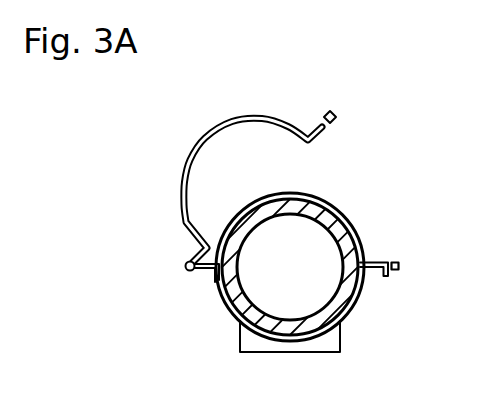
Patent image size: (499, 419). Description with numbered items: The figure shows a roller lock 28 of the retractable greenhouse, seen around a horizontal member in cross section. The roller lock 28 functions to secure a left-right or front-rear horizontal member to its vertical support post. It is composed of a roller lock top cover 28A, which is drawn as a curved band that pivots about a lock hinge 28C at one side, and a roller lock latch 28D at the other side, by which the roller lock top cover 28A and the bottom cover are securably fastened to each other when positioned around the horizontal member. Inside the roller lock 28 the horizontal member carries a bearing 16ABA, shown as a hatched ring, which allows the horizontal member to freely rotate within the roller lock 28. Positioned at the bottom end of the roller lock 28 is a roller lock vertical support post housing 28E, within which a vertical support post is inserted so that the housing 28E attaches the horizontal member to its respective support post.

The bearing 16ABA is at (308, 200).
The roller lock 28 is at (182, 325).
The roller lock top cover 28A is at (184, 170).
The lock hinge 28C is at (186, 263).
The roller lock latch 28D is at (377, 262).
The roller lock vertical support post housing 28E is at (255, 353).